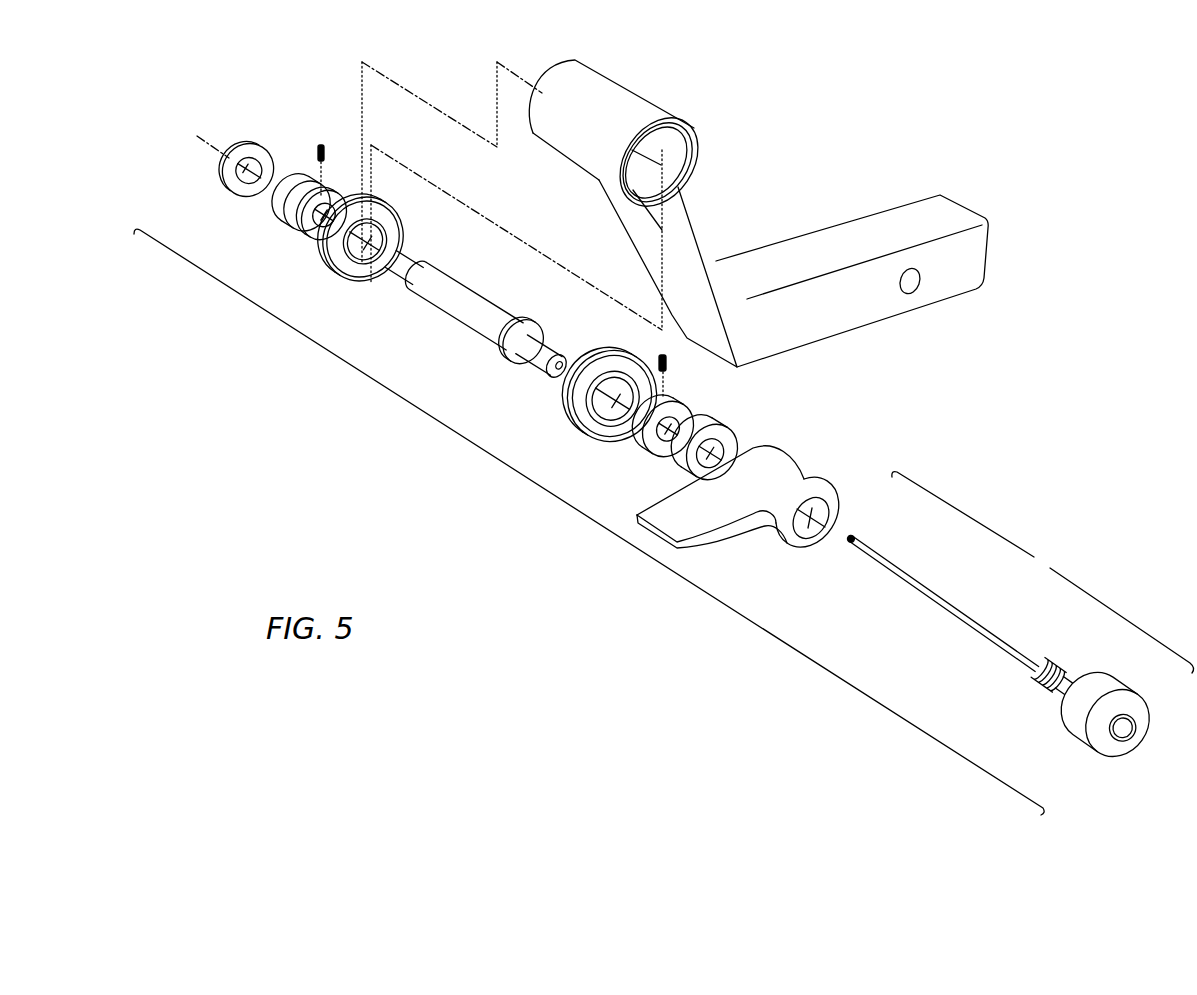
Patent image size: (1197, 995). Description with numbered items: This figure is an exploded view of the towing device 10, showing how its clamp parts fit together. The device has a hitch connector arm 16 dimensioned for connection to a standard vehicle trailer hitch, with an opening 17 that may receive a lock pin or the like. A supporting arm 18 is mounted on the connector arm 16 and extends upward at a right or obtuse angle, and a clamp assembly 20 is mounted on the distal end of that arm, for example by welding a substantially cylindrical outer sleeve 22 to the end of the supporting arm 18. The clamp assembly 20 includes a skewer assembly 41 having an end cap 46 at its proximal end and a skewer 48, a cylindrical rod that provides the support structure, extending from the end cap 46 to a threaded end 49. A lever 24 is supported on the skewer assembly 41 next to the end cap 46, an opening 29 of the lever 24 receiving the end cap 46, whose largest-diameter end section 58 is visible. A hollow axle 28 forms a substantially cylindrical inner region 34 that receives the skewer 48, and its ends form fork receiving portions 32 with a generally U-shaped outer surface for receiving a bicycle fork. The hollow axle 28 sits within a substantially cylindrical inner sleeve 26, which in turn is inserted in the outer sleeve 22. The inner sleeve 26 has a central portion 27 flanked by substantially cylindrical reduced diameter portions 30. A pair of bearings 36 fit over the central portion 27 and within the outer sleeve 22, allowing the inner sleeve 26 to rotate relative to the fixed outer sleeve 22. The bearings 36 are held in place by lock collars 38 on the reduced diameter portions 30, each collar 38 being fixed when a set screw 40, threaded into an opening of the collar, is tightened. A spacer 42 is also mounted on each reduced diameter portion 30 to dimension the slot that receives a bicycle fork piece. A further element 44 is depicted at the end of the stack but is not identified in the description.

The towing device 10 is at (805, 137).
The hitch connector arm 16 is at (852, 281).
The opening 17 is at (920, 284).
The supporting arm 18 is at (699, 285).
The clamp assembly 20 is at (561, 503).
The outer sleeve 22 is at (582, 129).
The lever 24 is at (755, 493).
The inner sleeve 26 is at (465, 315).
The central portion 27 is at (456, 316).
The hollow axle 28 is at (530, 376).
The opening 29 is at (828, 511).
The reduced diameter portions 30 is at (522, 334).
The fork receiving portions 32 is at (404, 256).
The inner region 34 is at (371, 262).
The bearings 36 is at (341, 278).
The lock collars 38 is at (312, 242).
The set screw 40 is at (319, 143).
The skewer assembly 41 is at (1002, 620).
The spacer 42 is at (294, 173).
The end cap 44 is at (241, 146).
The end cap 46 is at (994, 621).
The skewer 48 is at (951, 573).
The threaded end 49 is at (850, 535).
The end section 58 is at (1068, 722).